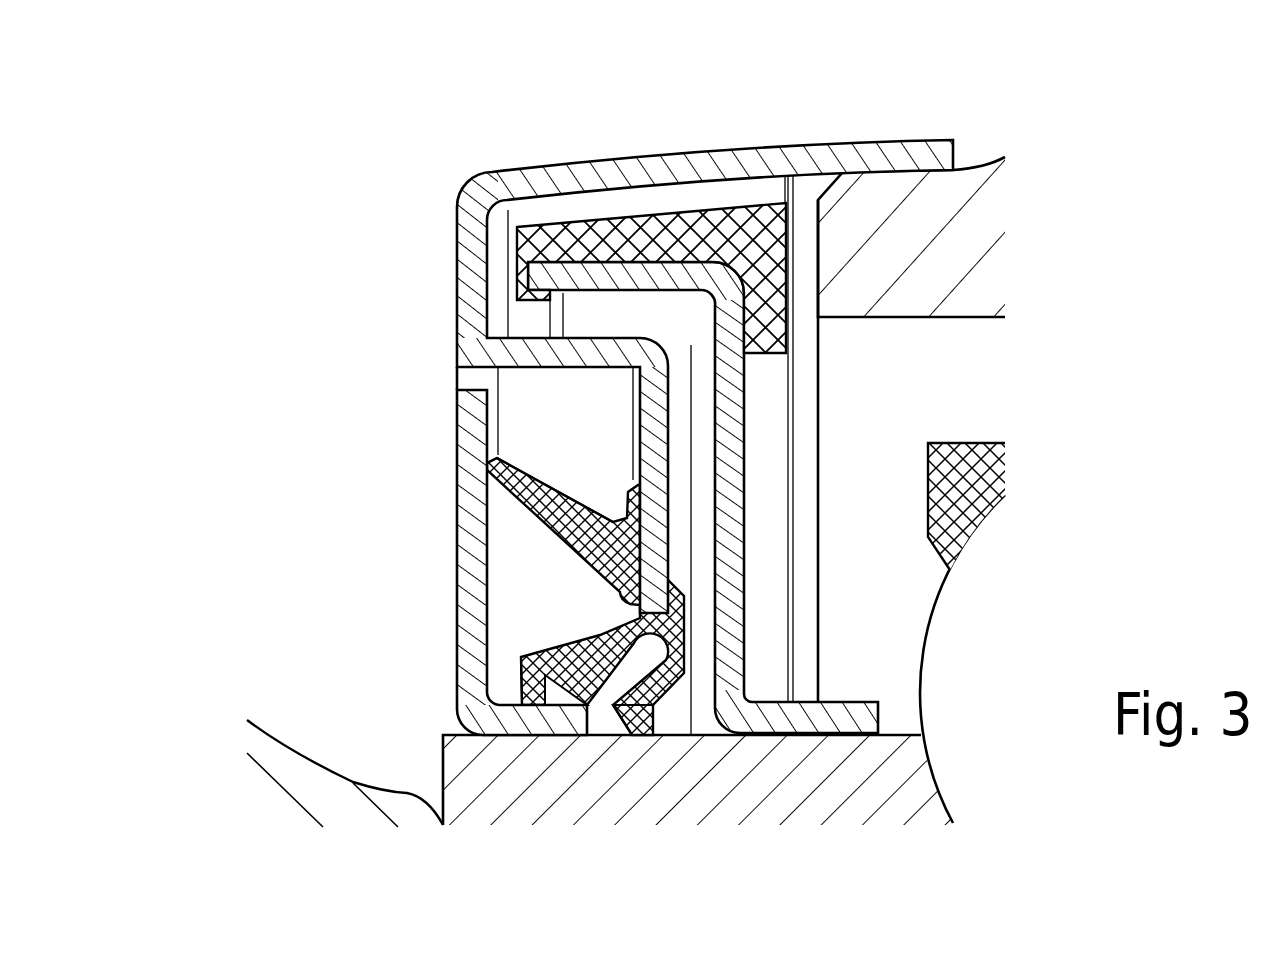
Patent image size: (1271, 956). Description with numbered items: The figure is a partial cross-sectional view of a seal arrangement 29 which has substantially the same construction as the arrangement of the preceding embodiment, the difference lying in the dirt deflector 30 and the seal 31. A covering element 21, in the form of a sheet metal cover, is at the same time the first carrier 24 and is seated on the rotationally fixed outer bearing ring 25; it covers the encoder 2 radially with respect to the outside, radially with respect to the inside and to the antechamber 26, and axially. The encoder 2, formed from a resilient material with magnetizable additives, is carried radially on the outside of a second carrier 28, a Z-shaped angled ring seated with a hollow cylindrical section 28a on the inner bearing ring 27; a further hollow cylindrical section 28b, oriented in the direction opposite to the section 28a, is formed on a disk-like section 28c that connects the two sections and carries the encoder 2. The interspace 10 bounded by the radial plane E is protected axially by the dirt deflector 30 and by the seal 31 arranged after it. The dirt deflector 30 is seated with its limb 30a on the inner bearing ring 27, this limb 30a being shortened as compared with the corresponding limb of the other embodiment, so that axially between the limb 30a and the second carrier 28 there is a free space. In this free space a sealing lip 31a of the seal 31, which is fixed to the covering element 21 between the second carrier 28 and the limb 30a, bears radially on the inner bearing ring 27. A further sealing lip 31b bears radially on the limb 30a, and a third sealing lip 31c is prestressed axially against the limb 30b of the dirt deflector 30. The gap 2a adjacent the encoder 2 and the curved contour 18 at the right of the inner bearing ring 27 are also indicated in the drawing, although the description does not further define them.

The encoder 2 is at (636, 215).
The gap 2a is at (577, 215).
The interspace 10 is at (887, 537).
The shaft 18 is at (1013, 710).
The covering element 21 is at (457, 233).
The first carrier 24 is at (632, 437).
The outer bearing ring 25 is at (1037, 227).
The antechamber 26 is at (457, 410).
The inner bearing ring 27 is at (1000, 830).
The second carrier 28 is at (838, 456).
The hollow cylindrical section 28a is at (810, 735).
The hollow cylindrical section 28b is at (643, 277).
The disk-like section 28c is at (822, 500).
The seal arrangement 29 is at (123, 306).
The dirt deflector 30 is at (488, 633).
The limb 30a is at (540, 727).
The limb 30b is at (537, 437).
The seal 31 is at (539, 692).
The sealing lip 31a is at (657, 735).
The sealing lip 31b is at (503, 723).
The sealing lip 31c is at (471, 494).
The radial plane E is at (818, 598).